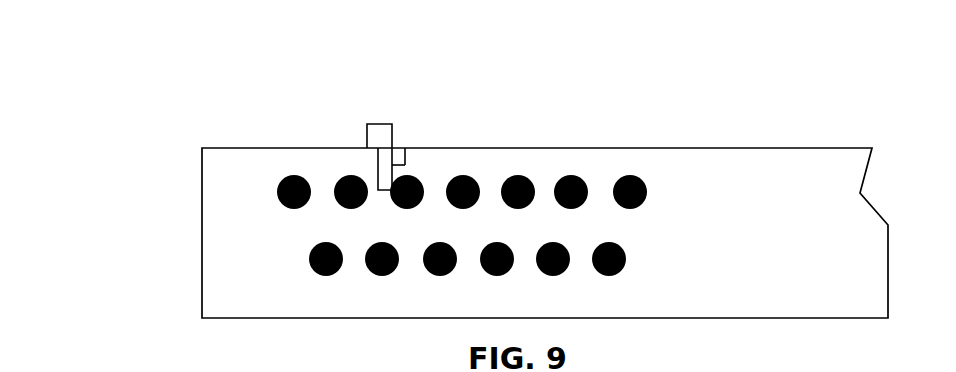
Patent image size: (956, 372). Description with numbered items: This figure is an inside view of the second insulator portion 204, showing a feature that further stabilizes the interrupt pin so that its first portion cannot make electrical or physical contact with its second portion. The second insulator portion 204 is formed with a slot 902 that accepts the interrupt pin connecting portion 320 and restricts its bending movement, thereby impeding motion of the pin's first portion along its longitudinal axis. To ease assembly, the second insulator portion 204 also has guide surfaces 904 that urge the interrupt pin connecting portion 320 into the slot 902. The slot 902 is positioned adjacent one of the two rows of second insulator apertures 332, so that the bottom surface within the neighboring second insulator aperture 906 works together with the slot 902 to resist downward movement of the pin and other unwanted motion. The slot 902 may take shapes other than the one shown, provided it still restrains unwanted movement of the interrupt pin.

The second insulator portion 204 is at (773, 97).
The interrupt pin connecting portion 320 is at (376, 122).
The second insulator apertures 332 is at (346, 225).
The slot 902 is at (405, 165).
The guide surfaces 904 is at (406, 154).
The second insulator aperture 906 is at (419, 205).